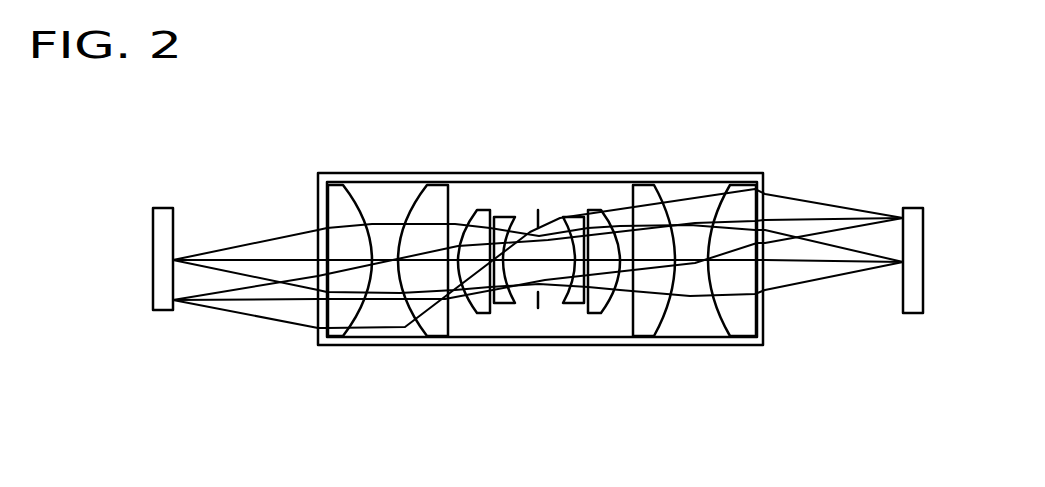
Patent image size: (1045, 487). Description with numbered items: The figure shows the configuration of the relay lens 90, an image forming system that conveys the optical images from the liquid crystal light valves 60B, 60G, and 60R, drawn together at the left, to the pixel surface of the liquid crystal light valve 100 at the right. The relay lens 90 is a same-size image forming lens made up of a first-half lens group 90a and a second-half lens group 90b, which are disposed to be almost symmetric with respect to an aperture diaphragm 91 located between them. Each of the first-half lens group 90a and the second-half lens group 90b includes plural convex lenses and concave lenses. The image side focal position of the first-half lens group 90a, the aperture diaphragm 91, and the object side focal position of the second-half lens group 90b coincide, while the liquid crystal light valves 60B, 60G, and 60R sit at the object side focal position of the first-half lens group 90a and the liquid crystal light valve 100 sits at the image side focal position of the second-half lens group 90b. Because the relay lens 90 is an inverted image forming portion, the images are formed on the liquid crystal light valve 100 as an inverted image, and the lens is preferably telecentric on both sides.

The liquid crystal light valve 60R is at (172, 227).
The liquid crystal light valve 60G is at (172, 227).
The liquid crystal light valve 60B is at (171, 177).
The relay lens 90 is at (540, 276).
The first-half lens group 90a is at (390, 351).
The second-half lens group 90b is at (693, 353).
The aperture diaphragm 91 is at (525, 345).
The liquid crystal light valve 100 is at (912, 207).